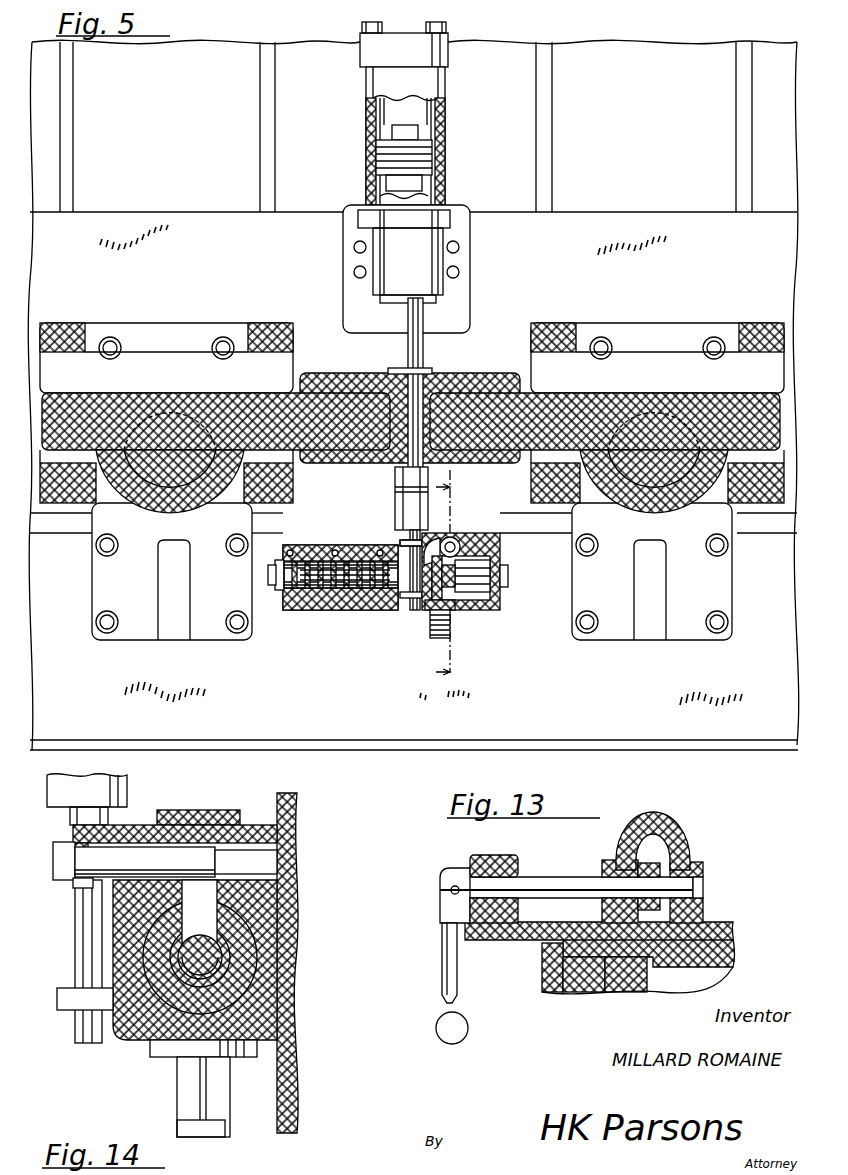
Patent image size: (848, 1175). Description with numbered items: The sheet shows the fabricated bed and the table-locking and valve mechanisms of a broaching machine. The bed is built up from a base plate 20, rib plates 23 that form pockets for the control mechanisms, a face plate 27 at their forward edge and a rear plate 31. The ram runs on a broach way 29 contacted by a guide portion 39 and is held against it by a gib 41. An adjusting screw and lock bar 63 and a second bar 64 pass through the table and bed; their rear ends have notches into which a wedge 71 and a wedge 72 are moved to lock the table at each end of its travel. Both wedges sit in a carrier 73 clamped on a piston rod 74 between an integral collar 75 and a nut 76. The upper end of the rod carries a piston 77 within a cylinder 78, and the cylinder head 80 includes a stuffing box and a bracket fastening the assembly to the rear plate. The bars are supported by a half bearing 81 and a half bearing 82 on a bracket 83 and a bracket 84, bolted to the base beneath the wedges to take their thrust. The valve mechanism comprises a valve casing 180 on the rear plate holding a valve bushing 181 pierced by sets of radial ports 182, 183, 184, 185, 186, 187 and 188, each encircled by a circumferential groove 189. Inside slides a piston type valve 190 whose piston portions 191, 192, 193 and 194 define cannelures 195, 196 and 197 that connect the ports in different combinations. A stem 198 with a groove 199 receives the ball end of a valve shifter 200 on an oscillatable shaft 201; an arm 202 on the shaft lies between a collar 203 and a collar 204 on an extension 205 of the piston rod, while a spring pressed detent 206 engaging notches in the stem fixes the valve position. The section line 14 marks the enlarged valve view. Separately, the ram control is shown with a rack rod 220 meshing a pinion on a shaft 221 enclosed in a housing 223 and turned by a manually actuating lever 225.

In FIG. 5, the section line 14 is at (437, 582).
In FIG. 5, the base plate 20 is at (722, 740).
In FIG. 5, the rib plates 23 is at (70, 106).
In FIG. 13, the face plate 27 is at (734, 962).
In FIG. 5, the broach way 29 is at (448, 58).
In FIG. 13, the broach way 29 is at (620, 992).
In FIG. 5, the rear plate 31 is at (684, 218).
In FIG. 13, the guide portion 39 is at (584, 992).
In FIG. 13, the gib 41 is at (545, 978).
In FIG. 5, the adjusting screw and lock bar 63 is at (150, 520).
In FIG. 5, the adjusting screw and lock bar 64 is at (628, 520).
In FIG. 5, the wedge 71 is at (256, 376).
In FIG. 5, the wedge 72 is at (752, 376).
In FIG. 5, the carrier 73 is at (480, 373).
In FIG. 5, the piston rod 74 is at (424, 356).
In FIG. 5, the collar 75 is at (392, 368).
In FIG. 5, the nut 76 is at (430, 476).
In FIG. 5, the piston 77 is at (434, 150).
In FIG. 5, the cylinder 78 is at (446, 112).
In FIG. 5, the cylinder head 80 is at (462, 238).
In FIG. 5, the half bearing 81 is at (210, 518).
In FIG. 5, the half bearing 82 is at (692, 518).
In FIG. 5, the bracket 83 is at (92, 589).
In FIG. 5, the bracket 84 is at (734, 585).
In FIG. 5, the valve casing 180 is at (496, 610).
In FIG. 14, the valve casing 180 is at (140, 1040).
In FIG. 5, the valve bushing 181 is at (496, 596).
In FIG. 14, the valve bushing 181 is at (240, 960).
In FIG. 5, the radial ports 182 is at (302, 545).
In FIG. 5, the radial ports 183 is at (312, 562).
In FIG. 5, the radial ports 184 is at (322, 562).
In FIG. 5, the radial ports 185 is at (336, 545).
In FIG. 5, the radial ports 186 is at (350, 562).
In FIG. 5, the radial ports 187 is at (360, 610).
In FIG. 5, the radial ports 188 is at (388, 545).
In FIG. 5, the circumferential groove 189 is at (283, 572).
In FIG. 5, the piston type valve 190 is at (284, 580).
In FIG. 5, the piston portion 191 is at (296, 610).
In FIG. 5, the piston portion 192 is at (342, 610).
In FIG. 5, the piston portion 193 is at (365, 610).
In FIG. 5, the piston portion 194 is at (390, 610).
In FIG. 5, the cannelure 195 is at (305, 610).
In FIG. 5, the cannelure 196 is at (348, 610).
In FIG. 5, the cannelure 197 is at (372, 610).
In FIG. 5, the stem 198 is at (472, 610).
In FIG. 14, the stem 198 is at (212, 970).
In FIG. 5, the groove 199 is at (508, 575).
In FIG. 5, the valve shifter 200 is at (495, 560).
In FIG. 14, the valve shifter 200 is at (200, 932).
In FIG. 14, the oscillatable shaft 201 is at (128, 858).
In FIG. 5, the arm 202 is at (460, 545).
In FIG. 14, the arm 202 is at (74, 896).
In FIG. 5, the collar 203 is at (444, 538).
In FIG. 5, the collar 204 is at (398, 610).
In FIG. 14, the collar 204 is at (74, 1006).
In FIG. 5, the extension 205 is at (438, 545).
In FIG. 14, the extension 205 is at (80, 960).
In FIG. 5, the spring pressed detent 206 is at (452, 626).
In FIG. 13, the rod 220 is at (675, 830).
In FIG. 13, the shaft 221 is at (578, 866).
In FIG. 13, the housing 223 is at (680, 843).
In FIG. 13, the manually actuating lever 225 is at (442, 964).